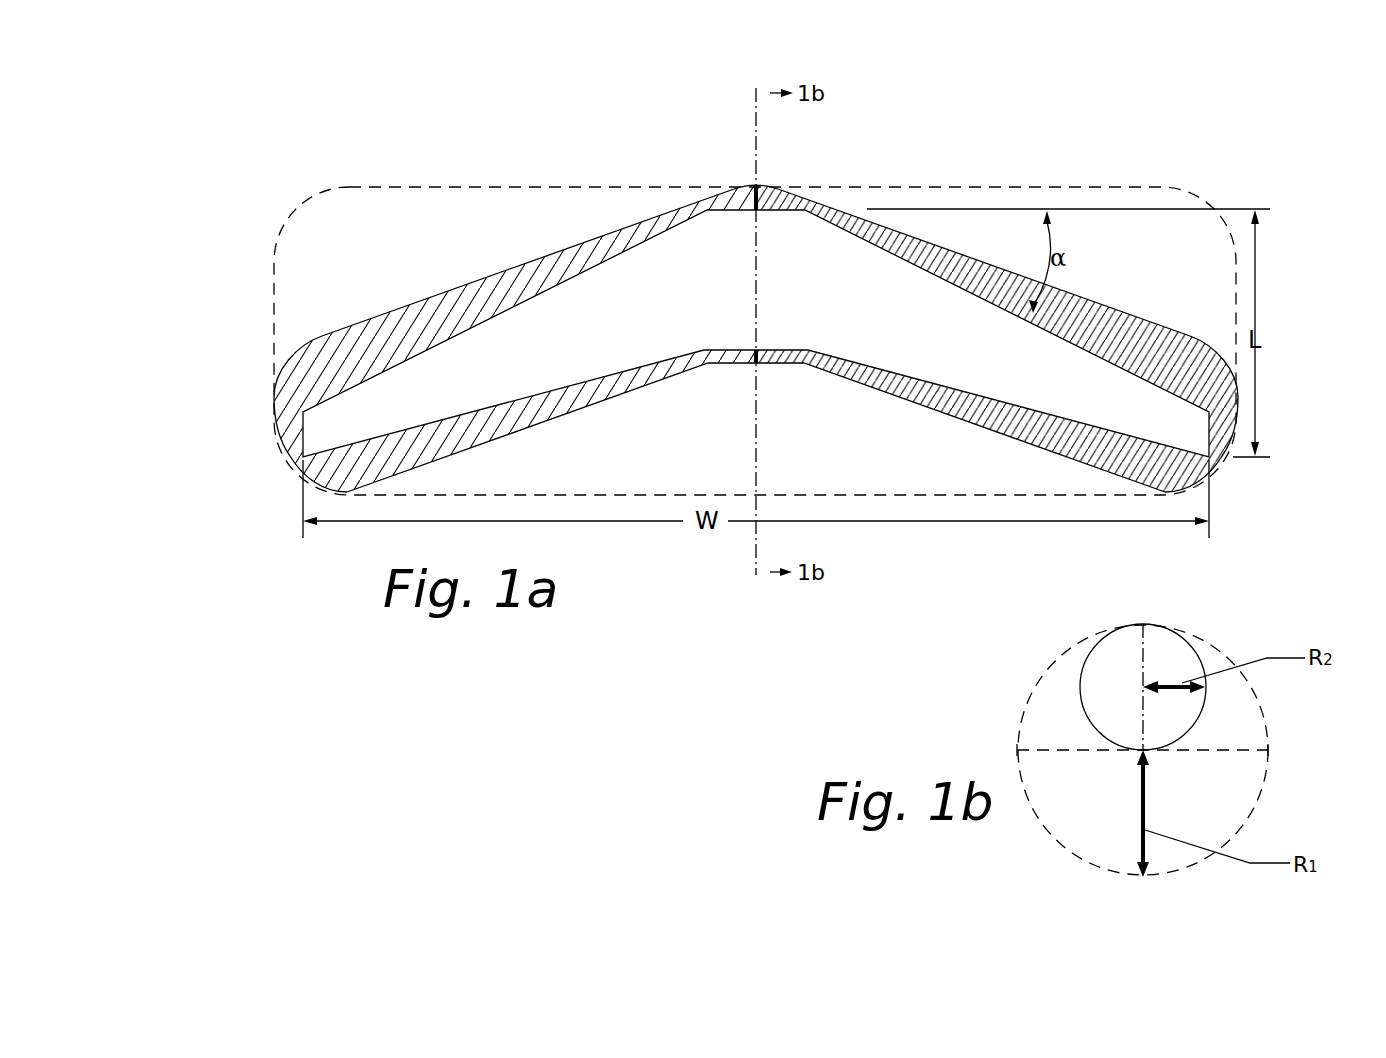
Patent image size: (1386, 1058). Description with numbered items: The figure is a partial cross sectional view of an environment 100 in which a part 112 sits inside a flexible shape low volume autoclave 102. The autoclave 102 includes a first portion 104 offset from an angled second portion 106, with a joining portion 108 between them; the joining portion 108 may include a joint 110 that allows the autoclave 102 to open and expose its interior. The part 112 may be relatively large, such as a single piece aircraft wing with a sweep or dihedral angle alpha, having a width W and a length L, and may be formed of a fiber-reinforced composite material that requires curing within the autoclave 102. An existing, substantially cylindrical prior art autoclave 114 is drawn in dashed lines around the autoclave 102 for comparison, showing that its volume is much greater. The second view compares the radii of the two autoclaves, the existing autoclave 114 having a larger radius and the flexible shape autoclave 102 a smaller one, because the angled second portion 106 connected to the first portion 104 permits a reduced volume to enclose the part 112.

In FIG. 1A, the environment 100 is at (260, 90).
In FIG. 1A, the flexible shape low volume autoclave 102 is at (517, 263).
In FIG. 1B, the flexible shape low volume autoclave 102 is at (1197, 657).
In FIG. 1A, the first portion 104 is at (347, 332).
In FIG. 1A, the angled second portion 106 is at (1113, 476).
In FIG. 1A, the joining portion 108 is at (722, 178).
In FIG. 1A, the joint 110 is at (757, 184).
In FIG. 1A, the part 112 is at (1078, 402).
In FIG. 1A, the existing autoclave 114 is at (1080, 187).
In FIG. 1B, the existing autoclave 114 is at (1250, 812).